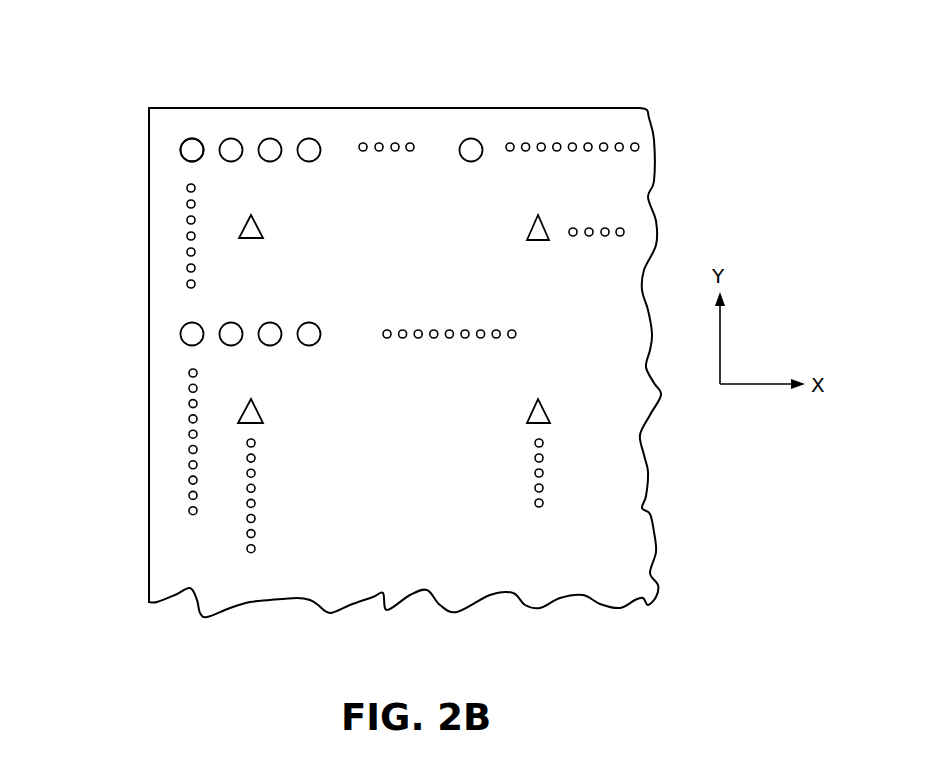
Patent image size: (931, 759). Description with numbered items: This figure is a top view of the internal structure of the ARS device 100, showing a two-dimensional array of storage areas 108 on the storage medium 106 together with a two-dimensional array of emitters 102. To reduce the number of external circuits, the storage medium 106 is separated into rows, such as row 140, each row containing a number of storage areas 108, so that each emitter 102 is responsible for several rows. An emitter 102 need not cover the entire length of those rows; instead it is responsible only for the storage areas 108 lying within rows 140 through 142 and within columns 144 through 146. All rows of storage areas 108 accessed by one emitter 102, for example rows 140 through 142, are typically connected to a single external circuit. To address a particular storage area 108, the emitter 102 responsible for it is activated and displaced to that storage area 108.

The ARS device 100 is at (117, 97).
The emitter 102 is at (262, 231).
The storage medium 106 is at (615, 107).
The storage area 108 is at (199, 146).
The row 140 is at (166, 152).
The row 142 is at (162, 334).
The column 144 is at (192, 121).
The column 146 is at (472, 121).